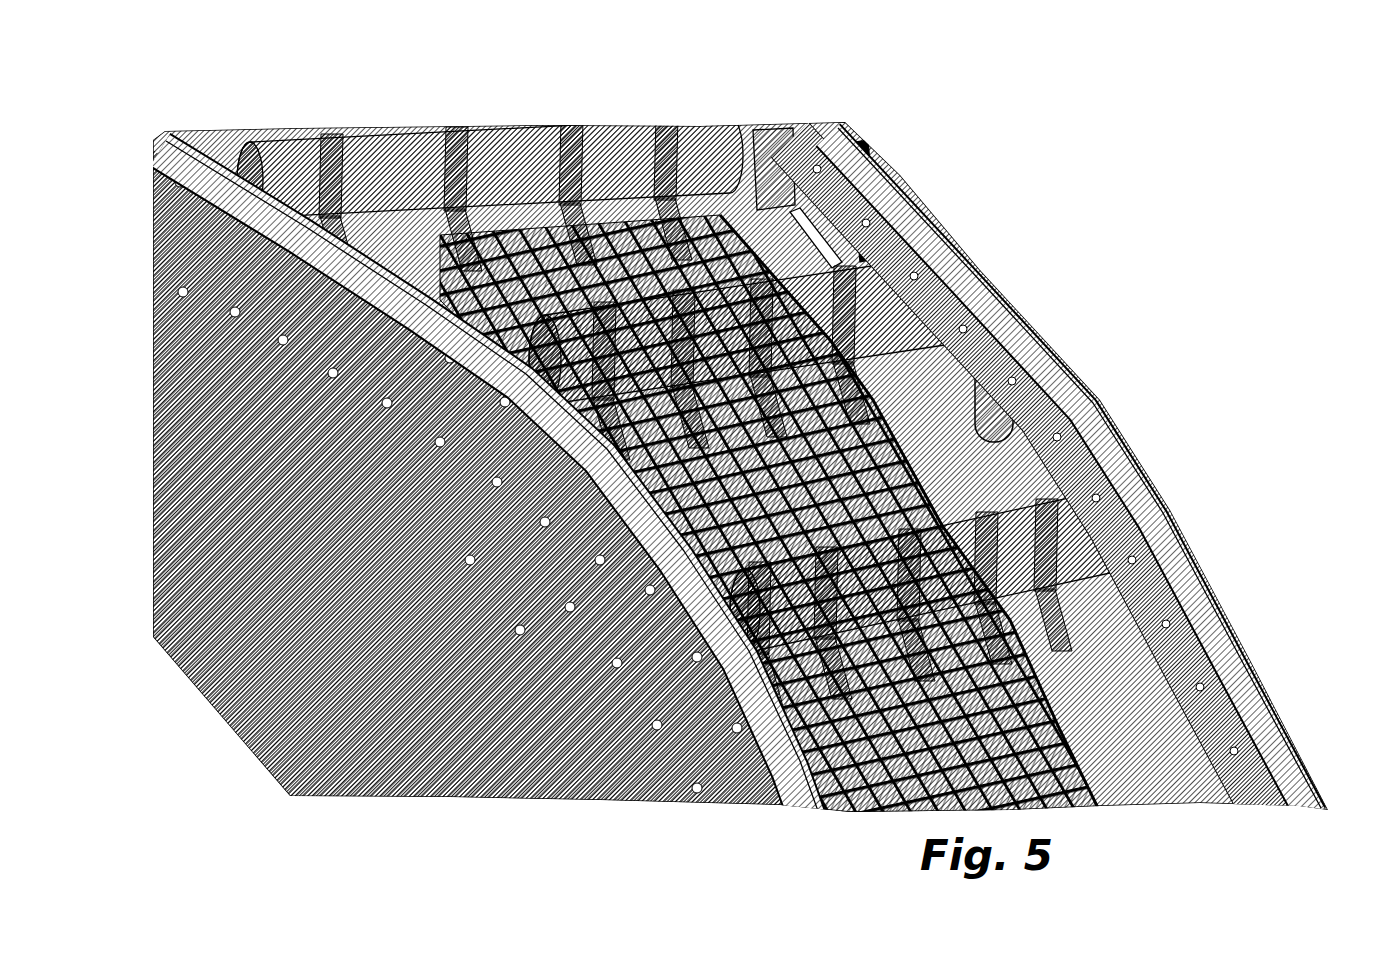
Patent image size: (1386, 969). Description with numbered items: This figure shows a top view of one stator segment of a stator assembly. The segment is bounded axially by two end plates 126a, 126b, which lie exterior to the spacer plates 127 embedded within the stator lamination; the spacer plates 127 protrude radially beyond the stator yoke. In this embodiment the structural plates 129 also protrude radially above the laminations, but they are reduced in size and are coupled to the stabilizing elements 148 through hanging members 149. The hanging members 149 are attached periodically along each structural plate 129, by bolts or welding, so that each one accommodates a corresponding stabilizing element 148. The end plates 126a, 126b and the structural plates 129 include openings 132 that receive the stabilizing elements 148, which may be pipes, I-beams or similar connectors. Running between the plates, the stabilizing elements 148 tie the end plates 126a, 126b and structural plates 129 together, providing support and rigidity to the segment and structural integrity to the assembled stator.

The end plate 126a is at (924, 225).
The end plate 126b is at (790, 784).
The spacer plate 127 is at (1057, 752).
The structural plate 129 is at (904, 478).
The stabilizing element 148 is at (1104, 522).
The opening 132 is at (1133, 560).
The hanging member 149 is at (1050, 622).